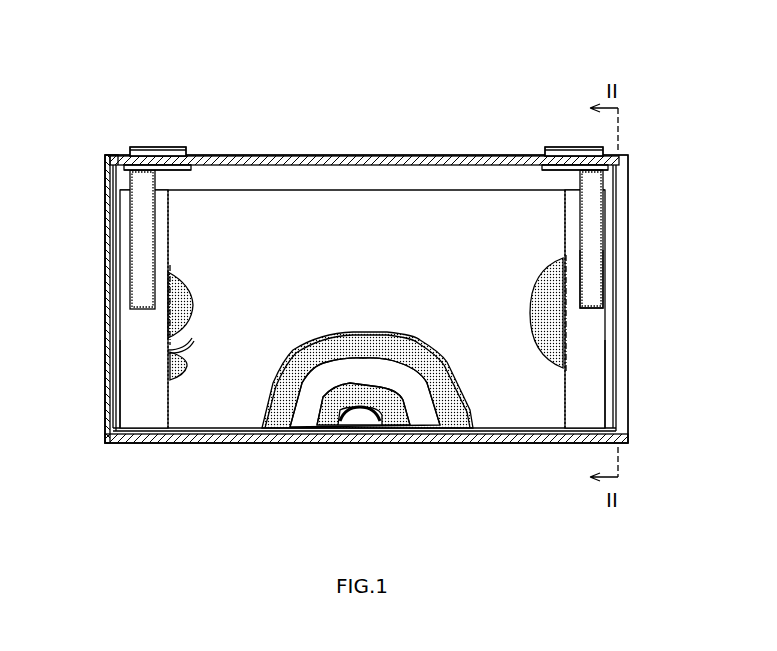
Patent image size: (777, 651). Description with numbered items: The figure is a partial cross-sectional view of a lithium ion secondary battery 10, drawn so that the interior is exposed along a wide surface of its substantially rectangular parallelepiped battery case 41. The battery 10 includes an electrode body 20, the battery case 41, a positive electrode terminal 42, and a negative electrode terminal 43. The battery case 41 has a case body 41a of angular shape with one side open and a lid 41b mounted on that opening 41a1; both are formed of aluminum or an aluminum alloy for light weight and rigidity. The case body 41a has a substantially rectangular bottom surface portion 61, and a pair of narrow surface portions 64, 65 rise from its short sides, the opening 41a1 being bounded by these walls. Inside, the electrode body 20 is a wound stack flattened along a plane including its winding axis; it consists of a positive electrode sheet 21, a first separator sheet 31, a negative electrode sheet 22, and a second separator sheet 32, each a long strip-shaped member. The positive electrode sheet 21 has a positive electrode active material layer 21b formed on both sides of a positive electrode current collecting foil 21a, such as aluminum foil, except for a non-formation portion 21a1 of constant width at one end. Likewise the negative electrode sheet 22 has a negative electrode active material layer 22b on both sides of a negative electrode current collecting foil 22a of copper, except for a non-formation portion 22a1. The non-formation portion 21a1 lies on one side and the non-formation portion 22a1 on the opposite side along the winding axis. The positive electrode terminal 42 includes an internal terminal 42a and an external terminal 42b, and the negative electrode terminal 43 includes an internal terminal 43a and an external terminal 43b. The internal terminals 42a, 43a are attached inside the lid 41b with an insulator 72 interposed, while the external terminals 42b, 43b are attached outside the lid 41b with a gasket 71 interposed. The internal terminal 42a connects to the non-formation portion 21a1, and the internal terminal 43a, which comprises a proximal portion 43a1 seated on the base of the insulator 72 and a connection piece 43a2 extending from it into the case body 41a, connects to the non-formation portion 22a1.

The lithium ion secondary battery 10 is at (432, 88).
The electrode body 20 is at (290, 188).
The positive electrode sheet 21 is at (338, 435).
The positive electrode current collecting foil 21a is at (140, 363).
The non-formation portion 21a1 is at (142, 418).
The positive electrode active material layer 21b is at (190, 310).
The negative electrode sheet 22 is at (275, 435).
The negative electrode current collecting foil 22a is at (595, 355).
The non-formation portion 22a1 is at (603, 410).
The negative electrode active material layer 22b is at (185, 375).
The first separator sheet 31 is at (190, 340).
The second separator sheet 32 is at (365, 440).
The battery case 41 is at (655, 227).
The case body 41a is at (107, 228).
The opening 41a1 is at (115, 152).
The lid 41b is at (365, 155).
The positive electrode terminal 42 is at (150, 142).
The internal terminal 42a is at (125, 176).
The external terminal 42b is at (178, 146).
The negative electrode terminal 43 is at (580, 140).
The internal terminal 43a is at (607, 175).
The proximal portion 43a1 is at (560, 170).
The connection piece 43a2 is at (595, 270).
The external terminal 43b is at (553, 145).
The bottom surface portion 61 is at (470, 443).
The narrow surface portion 64 is at (108, 300).
The narrow surface portion 65 is at (625, 300).
The gasket 71 is at (125, 150).
The insulator 72 is at (200, 176).